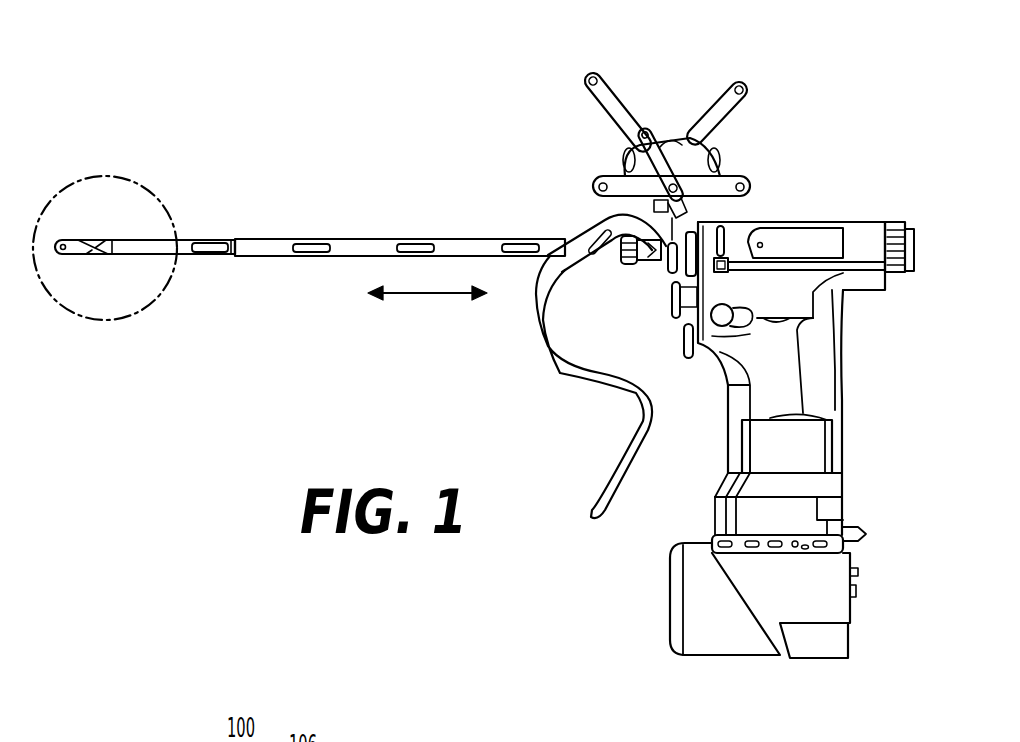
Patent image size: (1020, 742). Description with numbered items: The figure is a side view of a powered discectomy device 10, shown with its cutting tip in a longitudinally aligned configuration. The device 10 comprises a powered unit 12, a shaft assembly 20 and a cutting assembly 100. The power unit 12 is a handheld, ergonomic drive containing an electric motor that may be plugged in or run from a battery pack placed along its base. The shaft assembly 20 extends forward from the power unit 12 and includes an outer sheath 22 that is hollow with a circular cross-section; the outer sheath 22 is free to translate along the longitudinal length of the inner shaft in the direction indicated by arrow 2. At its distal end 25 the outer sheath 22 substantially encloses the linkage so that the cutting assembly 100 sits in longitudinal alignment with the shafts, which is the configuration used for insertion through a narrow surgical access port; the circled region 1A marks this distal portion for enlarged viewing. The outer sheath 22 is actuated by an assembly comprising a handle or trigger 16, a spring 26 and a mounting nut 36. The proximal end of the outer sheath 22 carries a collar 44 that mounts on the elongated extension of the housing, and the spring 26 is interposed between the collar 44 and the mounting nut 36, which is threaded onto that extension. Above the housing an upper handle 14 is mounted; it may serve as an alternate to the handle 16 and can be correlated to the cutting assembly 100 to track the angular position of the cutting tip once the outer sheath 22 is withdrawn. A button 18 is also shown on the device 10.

The detail view region 1A is at (128, 176).
The arrow 2 is at (414, 298).
The powered discectomy device 10 is at (722, 74).
The power unit 12 is at (812, 413).
The upper handle 14 is at (597, 72).
The handle 16 is at (637, 425).
The button 18 is at (672, 312).
The shaft assembly 20 is at (300, 224).
The outer sheath 22 is at (202, 254).
The distal end 25 is at (128, 252).
The spring 26 is at (641, 262).
The mounting nut 36 is at (624, 264).
The collar 44 is at (572, 238).
The cutting assembly 100 is at (94, 222).